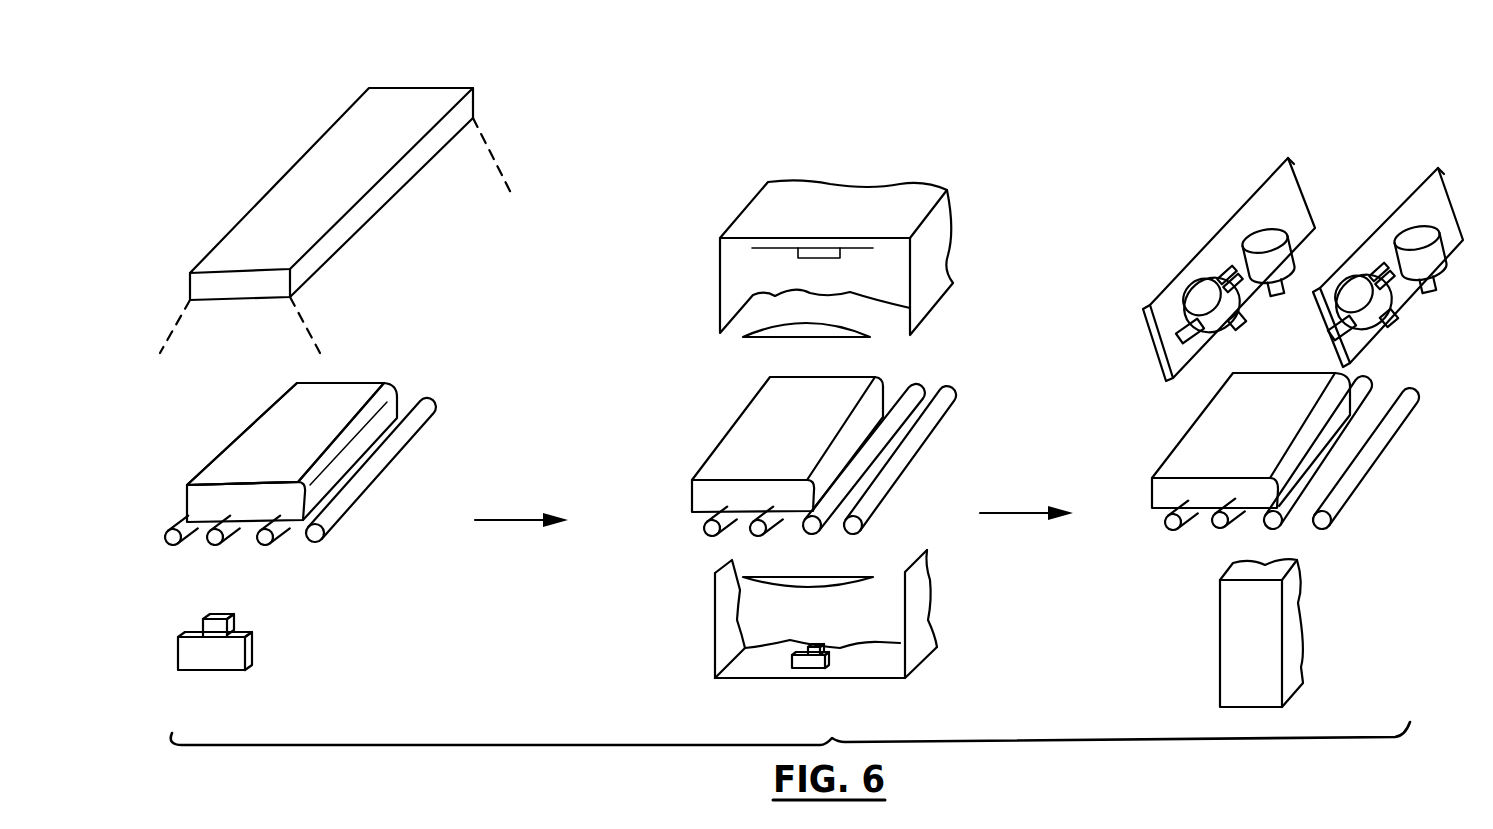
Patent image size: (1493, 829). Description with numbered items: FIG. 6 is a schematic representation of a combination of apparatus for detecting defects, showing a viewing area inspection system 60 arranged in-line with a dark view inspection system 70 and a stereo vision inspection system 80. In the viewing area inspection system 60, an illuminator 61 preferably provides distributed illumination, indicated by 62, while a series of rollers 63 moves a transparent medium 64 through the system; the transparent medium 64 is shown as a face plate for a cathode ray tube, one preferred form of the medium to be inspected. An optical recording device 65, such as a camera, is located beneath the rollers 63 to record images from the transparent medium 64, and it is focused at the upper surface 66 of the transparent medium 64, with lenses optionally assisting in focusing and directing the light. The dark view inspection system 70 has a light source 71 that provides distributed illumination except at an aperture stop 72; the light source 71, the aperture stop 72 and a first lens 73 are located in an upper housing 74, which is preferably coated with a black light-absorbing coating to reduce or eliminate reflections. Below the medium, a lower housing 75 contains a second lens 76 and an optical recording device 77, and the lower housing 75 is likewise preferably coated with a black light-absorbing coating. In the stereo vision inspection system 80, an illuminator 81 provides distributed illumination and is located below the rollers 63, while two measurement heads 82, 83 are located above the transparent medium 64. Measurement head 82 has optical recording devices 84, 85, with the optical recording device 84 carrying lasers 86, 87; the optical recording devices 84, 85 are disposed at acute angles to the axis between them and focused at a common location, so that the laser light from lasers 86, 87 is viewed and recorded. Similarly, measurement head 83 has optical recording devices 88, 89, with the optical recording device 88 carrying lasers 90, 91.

The viewing area inspection system 60 is at (281, 127).
The illuminator 61 is at (418, 95).
The distributed illumination 62 is at (496, 145).
The rollers 63 is at (315, 541).
The transparent medium 64 is at (345, 397).
The optical recording device 65 is at (210, 656).
The upper surface 66 is at (298, 444).
The dark view inspection system 70 is at (868, 105).
The light source 71 is at (862, 248).
The aperture stop 72 is at (820, 252).
The first lens 73 is at (835, 333).
The upper housing 74 is at (940, 270).
The lower housing 75 is at (917, 653).
The second lens 76 is at (823, 582).
The optical recording device 77 is at (812, 663).
The stereo vision inspection system 80 is at (1341, 112).
The illuminator 81 is at (1232, 673).
The measurement head 82 is at (1258, 212).
The measurement head 83 is at (1410, 220).
The optical recording device 84 is at (1200, 293).
The optical recording device 85 is at (1285, 252).
The laser 86 is at (1150, 312).
The laser 87 is at (1217, 267).
The optical recording device 88 is at (1391, 268).
The optical recording device 89 is at (1409, 229).
The laser 90 is at (1370, 343).
The laser 91 is at (1413, 299).